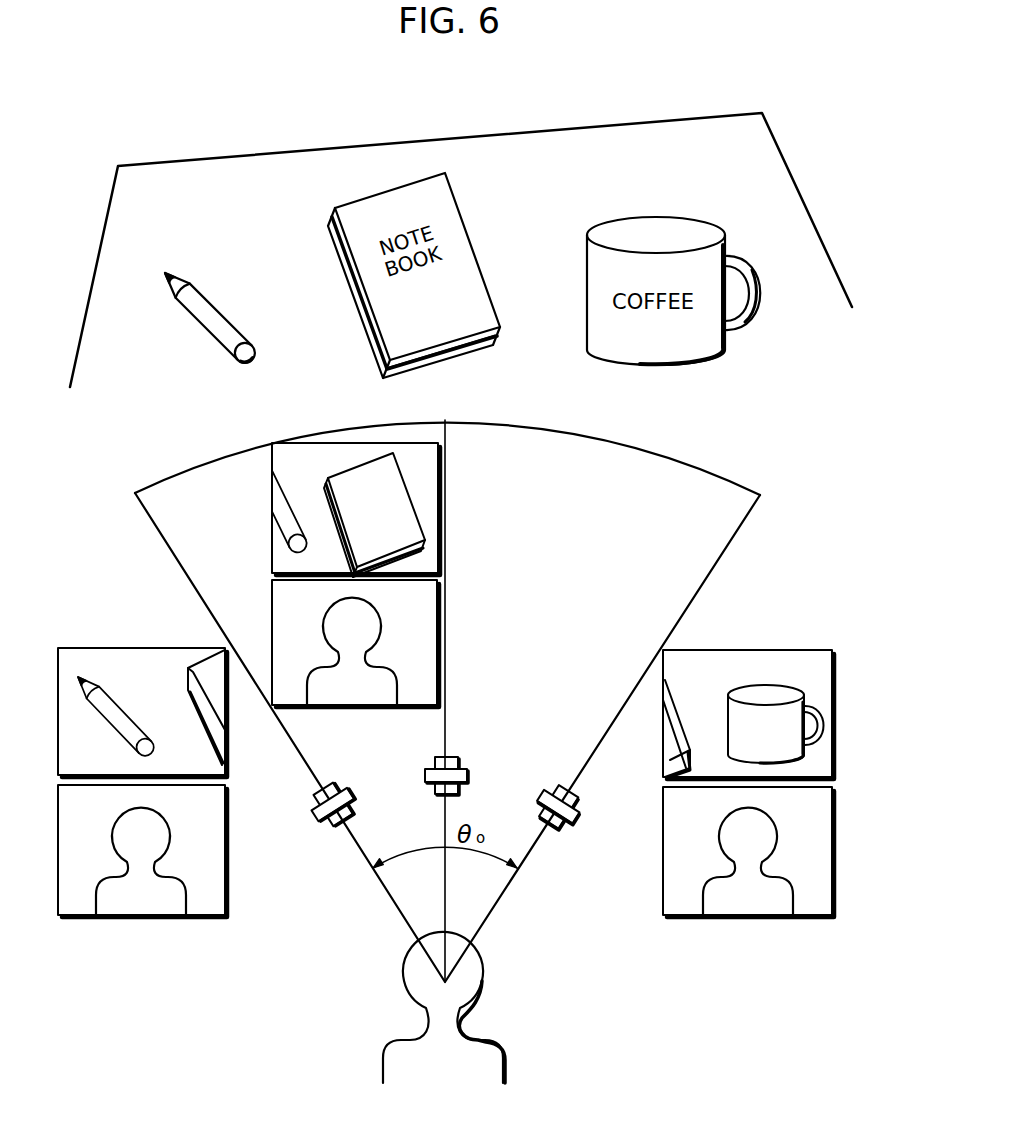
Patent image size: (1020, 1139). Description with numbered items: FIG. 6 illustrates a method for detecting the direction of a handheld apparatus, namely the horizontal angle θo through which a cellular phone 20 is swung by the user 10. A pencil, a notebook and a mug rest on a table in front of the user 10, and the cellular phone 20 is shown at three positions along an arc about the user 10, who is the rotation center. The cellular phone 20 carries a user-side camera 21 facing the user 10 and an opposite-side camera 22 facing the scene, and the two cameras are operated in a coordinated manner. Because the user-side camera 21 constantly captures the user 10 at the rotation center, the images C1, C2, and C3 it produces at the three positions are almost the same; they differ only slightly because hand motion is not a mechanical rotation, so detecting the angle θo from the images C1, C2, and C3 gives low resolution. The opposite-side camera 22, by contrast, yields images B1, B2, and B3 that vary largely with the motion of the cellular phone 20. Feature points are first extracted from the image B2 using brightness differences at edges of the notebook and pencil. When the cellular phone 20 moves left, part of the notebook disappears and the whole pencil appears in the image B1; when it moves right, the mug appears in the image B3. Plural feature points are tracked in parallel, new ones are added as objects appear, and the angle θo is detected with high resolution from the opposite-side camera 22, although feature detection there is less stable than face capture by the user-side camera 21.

The user 10 is at (470, 967).
The cellular phone 20 is at (305, 831).
The user-side camera 21 is at (312, 814).
The opposite-side camera 22 is at (334, 804).
The image B1 is at (82, 656).
The image B2 is at (284, 464).
The image B3 is at (711, 658).
The image C1 is at (79, 904).
The image C2 is at (293, 697).
The image C3 is at (688, 903).